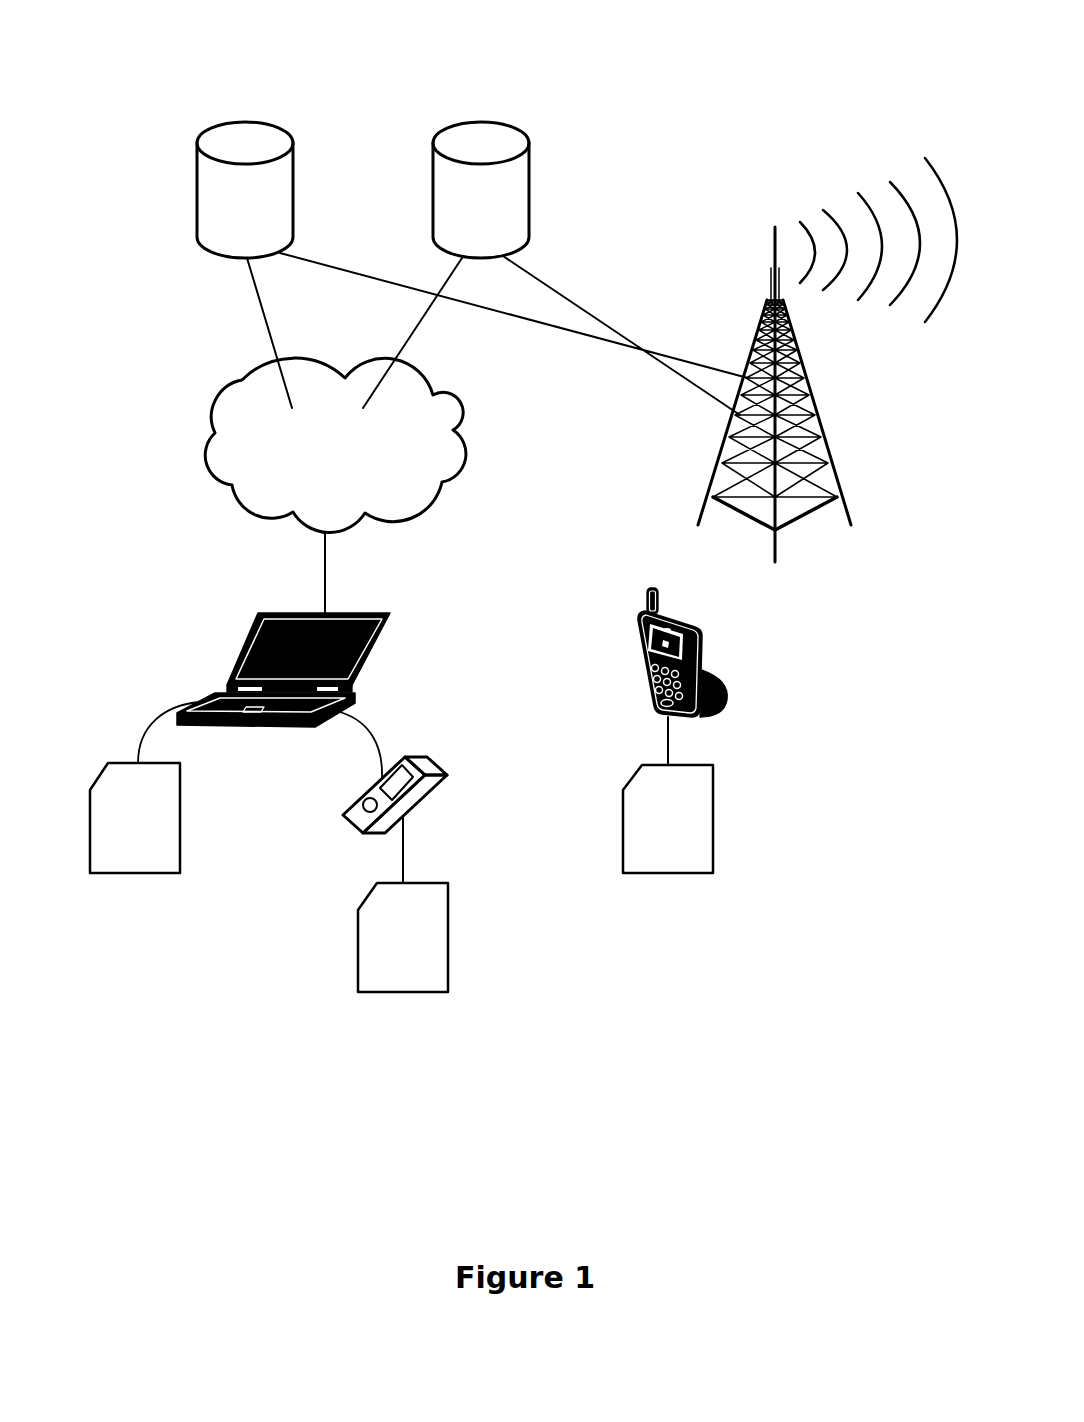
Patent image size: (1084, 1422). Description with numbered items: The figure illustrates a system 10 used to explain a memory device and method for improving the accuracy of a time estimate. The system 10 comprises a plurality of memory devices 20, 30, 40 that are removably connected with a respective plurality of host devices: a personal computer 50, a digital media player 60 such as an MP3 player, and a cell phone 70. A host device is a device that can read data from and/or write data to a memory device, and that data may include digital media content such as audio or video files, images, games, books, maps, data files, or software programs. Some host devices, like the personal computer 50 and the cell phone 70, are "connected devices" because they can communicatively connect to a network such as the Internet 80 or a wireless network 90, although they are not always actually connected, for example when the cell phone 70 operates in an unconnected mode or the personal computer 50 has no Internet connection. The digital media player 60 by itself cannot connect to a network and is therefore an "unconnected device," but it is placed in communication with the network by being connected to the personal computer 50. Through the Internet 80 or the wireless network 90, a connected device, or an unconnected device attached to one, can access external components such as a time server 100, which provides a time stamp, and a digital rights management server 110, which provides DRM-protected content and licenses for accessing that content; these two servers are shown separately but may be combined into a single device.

The system 10 is at (735, 44).
The memory device 20 is at (125, 763).
The memory device 30 is at (442, 883).
The memory device 40 is at (706, 765).
The personal computer 50 is at (242, 650).
The digital media player 60 is at (438, 770).
The cell phone 70 is at (705, 630).
The Internet 80 is at (248, 380).
The wireless network 90 is at (808, 407).
The time server 100 is at (233, 120).
The digital rights management server 110 is at (470, 120).